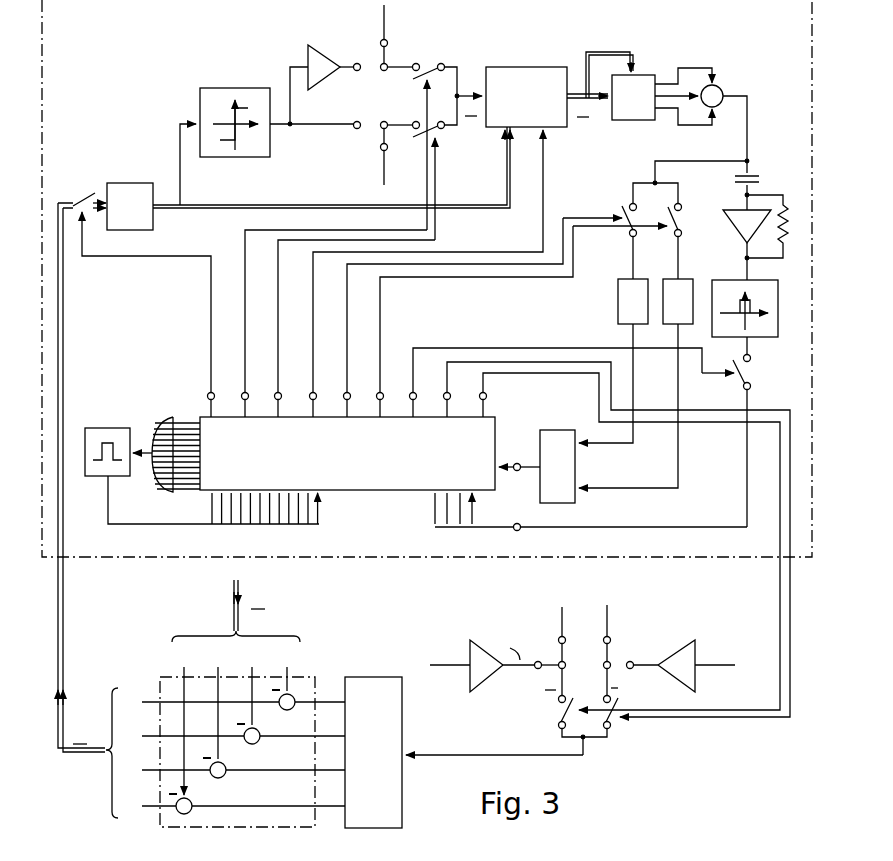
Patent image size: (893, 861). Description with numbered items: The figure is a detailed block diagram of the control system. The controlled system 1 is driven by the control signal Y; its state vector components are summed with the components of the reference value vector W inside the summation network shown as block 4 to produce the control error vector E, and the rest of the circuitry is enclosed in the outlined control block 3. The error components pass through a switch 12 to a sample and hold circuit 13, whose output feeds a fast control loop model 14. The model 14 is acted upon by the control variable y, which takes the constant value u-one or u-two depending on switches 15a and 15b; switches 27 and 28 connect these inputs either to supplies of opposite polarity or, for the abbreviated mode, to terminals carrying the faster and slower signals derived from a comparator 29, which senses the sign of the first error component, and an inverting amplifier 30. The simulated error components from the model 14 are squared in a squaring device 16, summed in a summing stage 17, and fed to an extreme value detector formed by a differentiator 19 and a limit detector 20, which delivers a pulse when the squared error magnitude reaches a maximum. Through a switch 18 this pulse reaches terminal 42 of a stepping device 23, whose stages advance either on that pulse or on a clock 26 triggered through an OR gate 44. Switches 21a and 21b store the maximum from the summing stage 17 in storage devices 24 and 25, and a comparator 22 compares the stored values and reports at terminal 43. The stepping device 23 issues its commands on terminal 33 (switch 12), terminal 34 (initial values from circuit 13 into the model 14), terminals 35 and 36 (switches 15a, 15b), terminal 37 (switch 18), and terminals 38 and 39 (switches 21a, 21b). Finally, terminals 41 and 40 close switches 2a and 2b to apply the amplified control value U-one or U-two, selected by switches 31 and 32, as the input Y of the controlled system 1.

The controlled system 1 is at (464, 752).
The switch 2a is at (559, 727).
The switch 2b is at (612, 726).
The control unit 3 is at (402, 588).
The weighting network 4 is at (163, 676).
The switch 12 is at (88, 196).
The sample and hold circuit 13 is at (308, 178).
The fast control loop model 14 is at (544, 89).
The switch 15a is at (440, 62).
The switch 15b is at (444, 128).
The squaring device 16 is at (645, 76).
The summing stage 17 is at (724, 88).
The switch 18 is at (752, 372).
The differentiator 19 is at (760, 200).
The limit detector 20 is at (778, 308).
The switch 21a is at (624, 213).
The switch 21b is at (680, 216).
The comparator 22 is at (557, 466).
The stepping device 23 is at (356, 492).
The storage device 24 is at (613, 361).
The storage device 25 is at (636, 383).
The clock 26 is at (117, 478).
The switch 27 is at (380, 57).
The switch 28 is at (380, 152).
The comparator 29 is at (225, 88).
The inverting amplifier 30 is at (308, 55).
The switch 31 is at (558, 650).
The switch 32 is at (611, 652).
The terminal 33 is at (159, 314).
The terminal 34 is at (427, 273).
The terminal 35 is at (335, 323).
The terminal 36 is at (355, 328).
The terminal 37 is at (556, 382).
The terminal 38 is at (454, 317).
The terminal 39 is at (475, 321).
The terminal 40 is at (617, 539).
The terminal 41 is at (630, 541).
The terminal 42 is at (591, 540).
The terminal 43 is at (519, 481).
The OR gate 44 is at (168, 420).